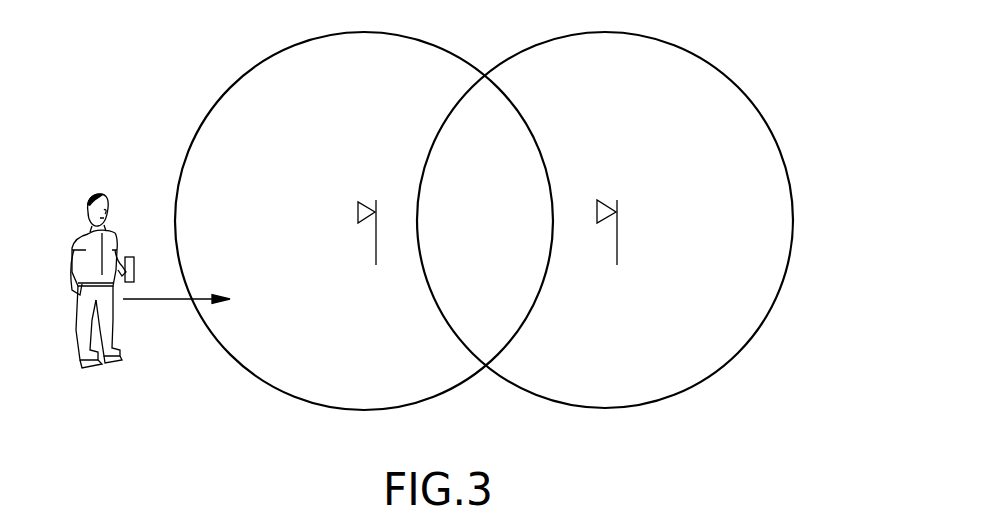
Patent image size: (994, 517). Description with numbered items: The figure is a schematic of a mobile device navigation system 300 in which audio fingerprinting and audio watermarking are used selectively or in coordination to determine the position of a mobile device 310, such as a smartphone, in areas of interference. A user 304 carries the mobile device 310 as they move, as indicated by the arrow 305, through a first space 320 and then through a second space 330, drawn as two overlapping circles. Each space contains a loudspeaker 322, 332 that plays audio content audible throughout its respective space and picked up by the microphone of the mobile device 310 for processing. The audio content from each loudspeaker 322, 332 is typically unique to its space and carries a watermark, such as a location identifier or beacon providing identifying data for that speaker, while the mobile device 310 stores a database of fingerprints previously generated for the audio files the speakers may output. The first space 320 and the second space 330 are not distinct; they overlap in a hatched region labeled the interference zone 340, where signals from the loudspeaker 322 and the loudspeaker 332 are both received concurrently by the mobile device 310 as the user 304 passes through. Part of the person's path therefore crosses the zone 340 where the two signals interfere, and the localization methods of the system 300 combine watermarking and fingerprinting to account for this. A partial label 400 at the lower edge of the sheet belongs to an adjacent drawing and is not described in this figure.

The mobile device navigation system 300 is at (103, 123).
The user 304 is at (80, 340).
The arrow 305 is at (140, 300).
The mobile device 310 is at (147, 253).
The first space 320 is at (223, 97).
The loudspeaker 322 is at (340, 204).
The second space 330 is at (742, 90).
The loudspeaker 332 is at (642, 238).
The interference zone 340 is at (847, 461).
The label of adjacent figure 400 is at (23, 516).